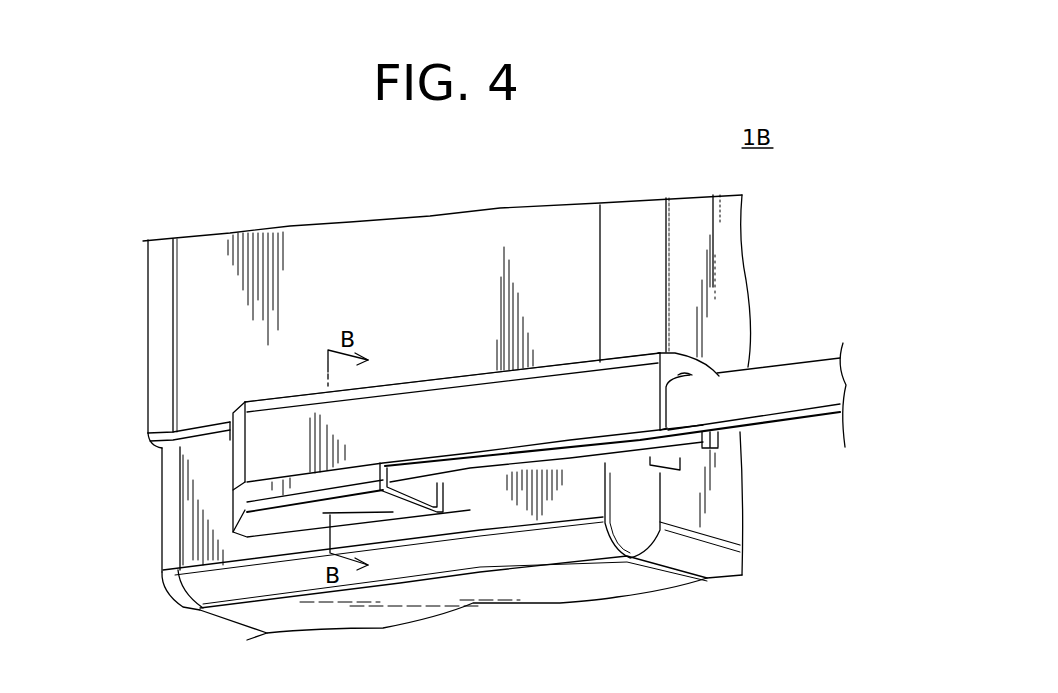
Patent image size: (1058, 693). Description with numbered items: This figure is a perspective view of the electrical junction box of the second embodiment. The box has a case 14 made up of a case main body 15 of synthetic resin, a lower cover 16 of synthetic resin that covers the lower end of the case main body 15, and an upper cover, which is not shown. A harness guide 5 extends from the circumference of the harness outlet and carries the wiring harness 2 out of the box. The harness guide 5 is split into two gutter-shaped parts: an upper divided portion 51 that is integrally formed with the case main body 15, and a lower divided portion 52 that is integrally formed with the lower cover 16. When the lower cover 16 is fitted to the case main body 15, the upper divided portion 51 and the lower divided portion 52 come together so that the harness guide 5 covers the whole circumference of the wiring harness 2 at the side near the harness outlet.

The case 14 is at (147, 273).
The case main body 15 is at (147, 337).
The lower cover 16 is at (160, 508).
The harness guide 5 is at (548, 363).
The upper divided portion 51 is at (424, 383).
The lower divided portion 52 is at (393, 512).
The wiring harness 2 is at (800, 370).